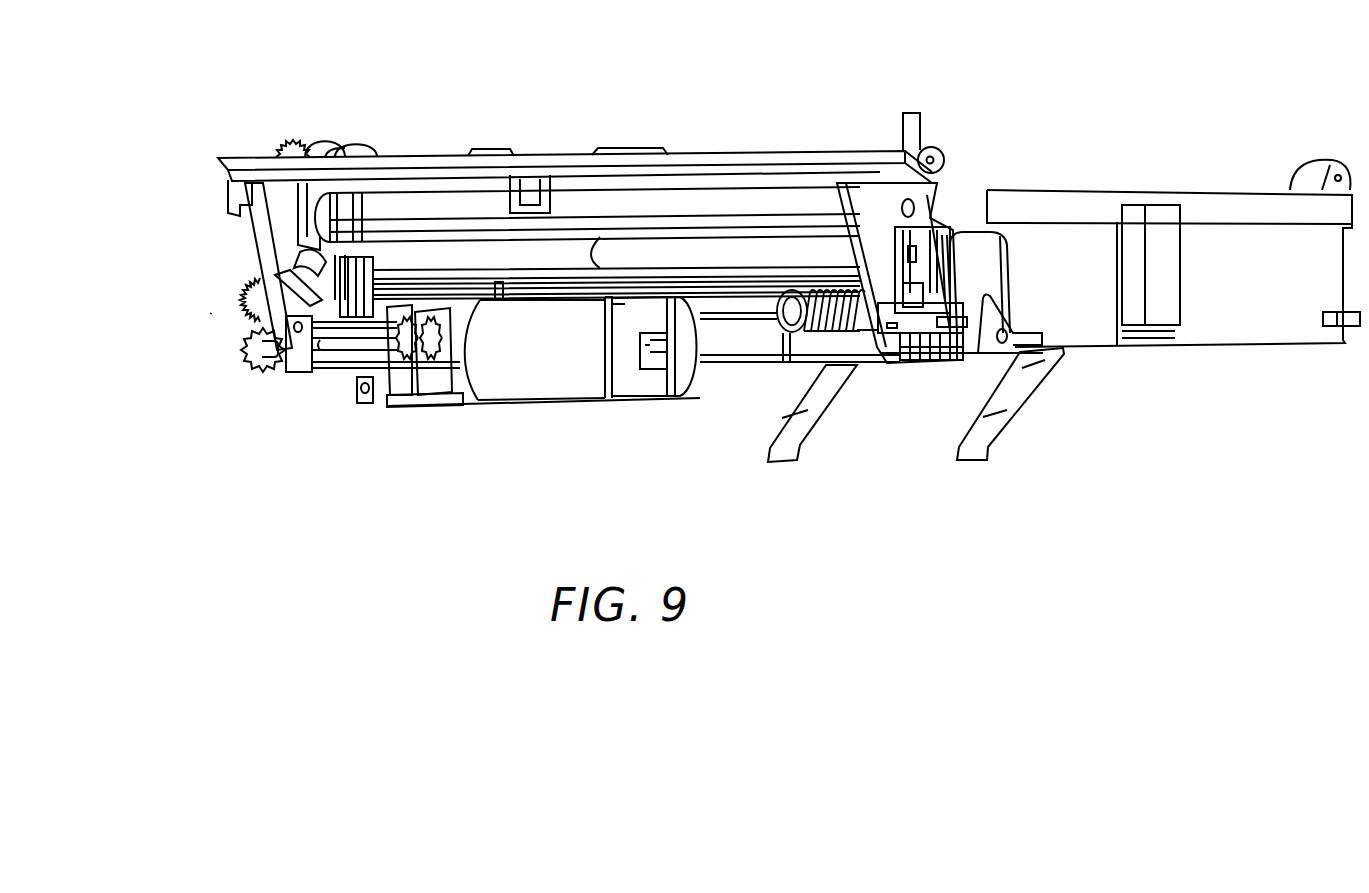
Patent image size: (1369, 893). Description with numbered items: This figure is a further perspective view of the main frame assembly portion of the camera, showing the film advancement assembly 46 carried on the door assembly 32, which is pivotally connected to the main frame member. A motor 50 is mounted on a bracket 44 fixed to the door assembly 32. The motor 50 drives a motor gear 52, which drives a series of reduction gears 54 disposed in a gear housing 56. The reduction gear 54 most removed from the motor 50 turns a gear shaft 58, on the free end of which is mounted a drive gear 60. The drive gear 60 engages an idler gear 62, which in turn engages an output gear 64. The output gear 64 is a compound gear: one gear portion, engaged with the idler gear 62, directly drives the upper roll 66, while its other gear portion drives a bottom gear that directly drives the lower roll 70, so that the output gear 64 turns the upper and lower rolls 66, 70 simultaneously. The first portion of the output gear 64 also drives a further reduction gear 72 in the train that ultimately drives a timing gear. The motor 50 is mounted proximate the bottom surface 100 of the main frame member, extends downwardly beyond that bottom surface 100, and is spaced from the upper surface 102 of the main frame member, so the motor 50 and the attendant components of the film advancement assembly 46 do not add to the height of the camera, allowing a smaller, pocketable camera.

The door assembly 32 is at (262, 198).
The bracket 44 is at (692, 378).
The film advancement assembly 46 is at (196, 319).
The motor 50 is at (585, 378).
The motor gear 52 is at (436, 356).
The reduction gears 54 is at (408, 370).
The gear housing 56 is at (468, 392).
The gear shaft 58 is at (325, 341).
The drive gear 60 is at (245, 348).
The idler gear 62 is at (245, 281).
The output gear 64 is at (292, 150).
The upper roll 66 is at (692, 215).
The lower roll 70 is at (763, 258).
The reduction gear 72 is at (338, 142).
The bottom surface 100 is at (765, 366).
The upper surface 102 is at (1095, 188).